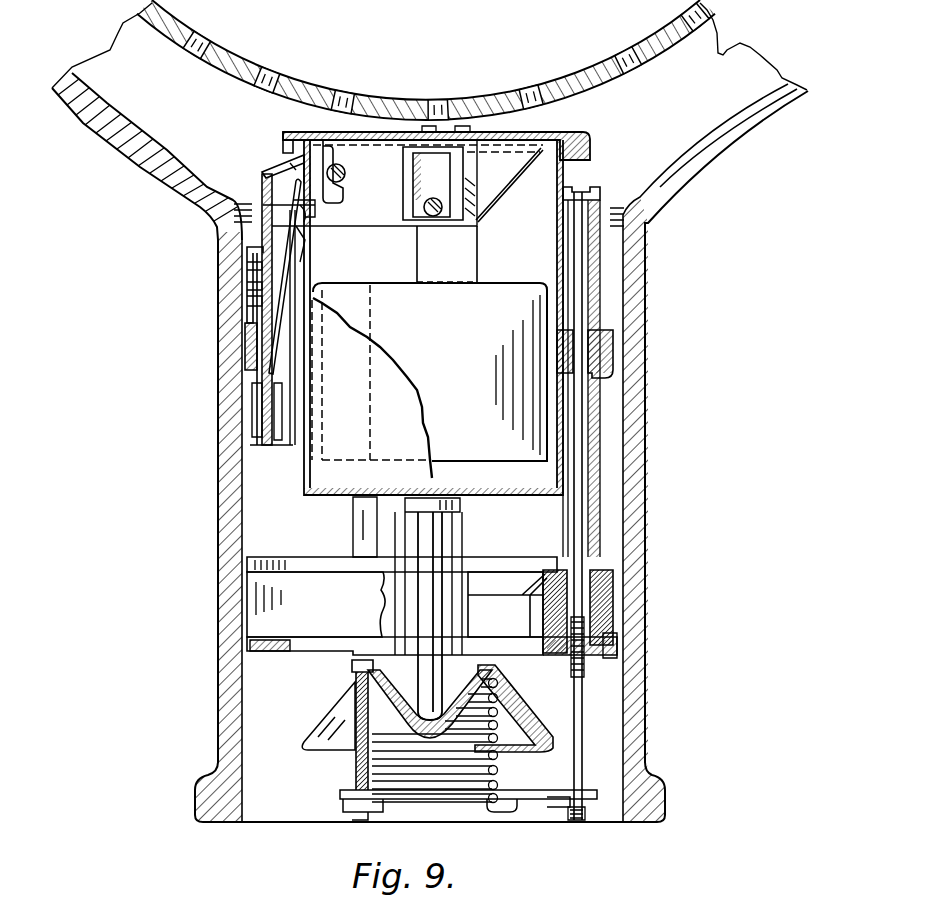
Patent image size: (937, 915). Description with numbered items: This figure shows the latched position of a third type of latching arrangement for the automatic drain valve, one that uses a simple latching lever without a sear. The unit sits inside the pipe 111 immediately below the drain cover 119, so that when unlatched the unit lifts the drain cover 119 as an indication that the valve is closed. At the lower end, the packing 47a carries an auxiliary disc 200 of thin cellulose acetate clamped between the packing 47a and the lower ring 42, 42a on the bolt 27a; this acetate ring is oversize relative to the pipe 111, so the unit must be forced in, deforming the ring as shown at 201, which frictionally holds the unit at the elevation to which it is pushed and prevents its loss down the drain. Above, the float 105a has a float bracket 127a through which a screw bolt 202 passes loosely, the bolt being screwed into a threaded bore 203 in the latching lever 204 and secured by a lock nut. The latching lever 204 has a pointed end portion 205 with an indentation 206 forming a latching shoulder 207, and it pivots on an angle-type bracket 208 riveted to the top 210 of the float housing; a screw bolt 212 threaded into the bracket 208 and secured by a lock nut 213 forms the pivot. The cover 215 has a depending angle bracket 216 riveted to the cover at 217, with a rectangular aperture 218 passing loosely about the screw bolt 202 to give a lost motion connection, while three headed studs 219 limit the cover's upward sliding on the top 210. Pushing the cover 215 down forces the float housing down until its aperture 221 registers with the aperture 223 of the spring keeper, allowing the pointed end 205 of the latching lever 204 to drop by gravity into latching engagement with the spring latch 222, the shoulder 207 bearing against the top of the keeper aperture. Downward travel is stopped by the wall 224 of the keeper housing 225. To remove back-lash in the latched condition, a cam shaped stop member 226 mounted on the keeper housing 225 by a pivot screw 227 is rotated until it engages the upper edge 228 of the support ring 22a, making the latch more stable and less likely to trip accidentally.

The drain cover 119 is at (578, 72).
The rivet point 217 is at (440, 165).
The headed studs 219 is at (455, 162).
The screw bolt 212 is at (324, 129).
The bracket 208 is at (332, 152).
The cover 215 is at (532, 133).
The top of the float housing 210 is at (566, 131).
The latching shoulder 207 is at (300, 157).
The keeper housing 225 is at (293, 167).
The aperture in the spring keeper 223 is at (292, 200).
The indentation 206 is at (342, 186).
The rectangular aperture 218 is at (412, 188).
The depending angle bracket 216 is at (508, 190).
The lock nut 213 is at (247, 240).
The latching lever 204 is at (312, 218).
The screw bolt 202 is at (424, 233).
The threaded bore 203 is at (434, 217).
The float bracket 127a is at (457, 268).
The float 105a is at (503, 293).
The pointed end portion 205 is at (315, 237).
The cam shaped stop member 226 is at (247, 267).
The aperture in the float housing 221 is at (300, 262).
The pivot screw 227 is at (250, 288).
The spring latch 222 is at (253, 300).
The upper edge of the support ring 228 is at (233, 328).
The upper edge of support ring 22a is at (248, 357).
The pipe 111 is at (630, 408).
The wall of the keeper housing 224 is at (240, 397).
The bolt 27a is at (580, 493).
The packing 47a is at (248, 590).
The deformed portion of acetate ring 201 is at (240, 637).
The auxiliary disc 200 is at (305, 625).
The lower ring 42 is at (284, 648).
The lower ring 42a is at (607, 650).